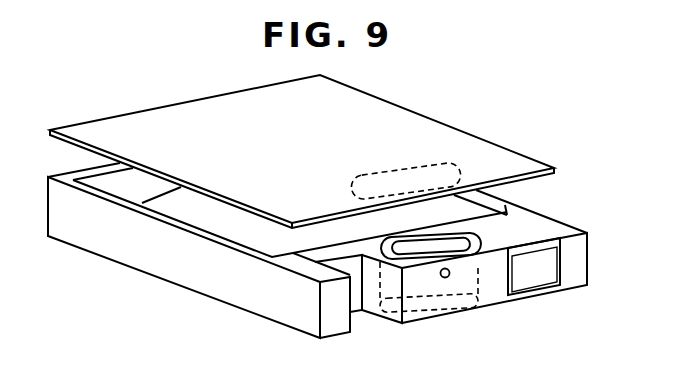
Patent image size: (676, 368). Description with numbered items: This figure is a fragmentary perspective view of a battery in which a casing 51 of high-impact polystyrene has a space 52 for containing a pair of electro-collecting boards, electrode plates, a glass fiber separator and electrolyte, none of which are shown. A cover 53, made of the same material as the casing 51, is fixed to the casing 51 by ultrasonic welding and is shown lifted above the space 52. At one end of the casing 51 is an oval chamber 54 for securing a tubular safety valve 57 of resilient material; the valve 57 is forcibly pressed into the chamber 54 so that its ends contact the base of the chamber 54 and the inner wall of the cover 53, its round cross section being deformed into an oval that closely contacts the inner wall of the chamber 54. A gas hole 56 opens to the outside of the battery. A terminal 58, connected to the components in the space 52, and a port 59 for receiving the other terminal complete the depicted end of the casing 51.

The casing 51 is at (127, 248).
The space 52 is at (205, 220).
The cover 53 is at (227, 103).
The oval chamber 54 is at (473, 248).
The gas hole 56 is at (445, 277).
The tubular safety valve 57 is at (421, 253).
The terminal 58 is at (541, 278).
The port 59 is at (358, 305).